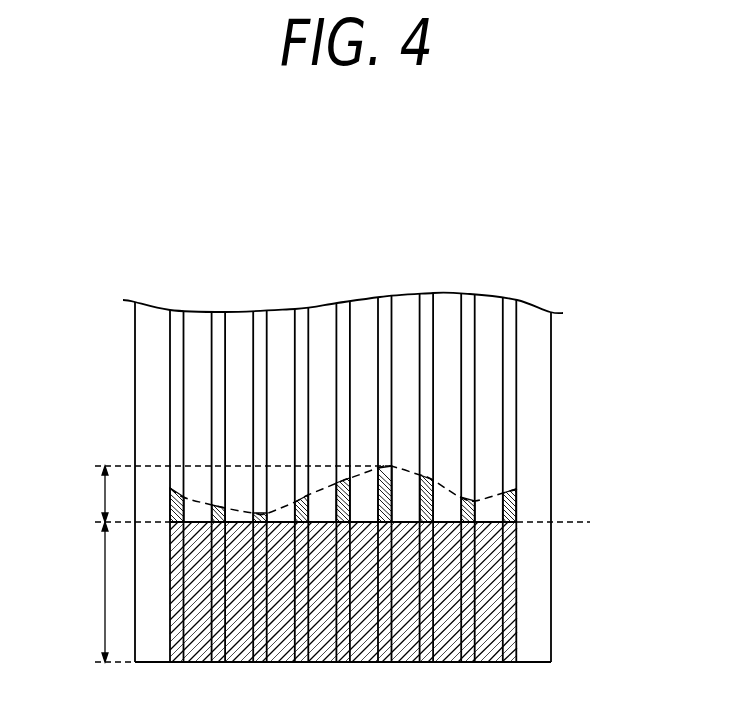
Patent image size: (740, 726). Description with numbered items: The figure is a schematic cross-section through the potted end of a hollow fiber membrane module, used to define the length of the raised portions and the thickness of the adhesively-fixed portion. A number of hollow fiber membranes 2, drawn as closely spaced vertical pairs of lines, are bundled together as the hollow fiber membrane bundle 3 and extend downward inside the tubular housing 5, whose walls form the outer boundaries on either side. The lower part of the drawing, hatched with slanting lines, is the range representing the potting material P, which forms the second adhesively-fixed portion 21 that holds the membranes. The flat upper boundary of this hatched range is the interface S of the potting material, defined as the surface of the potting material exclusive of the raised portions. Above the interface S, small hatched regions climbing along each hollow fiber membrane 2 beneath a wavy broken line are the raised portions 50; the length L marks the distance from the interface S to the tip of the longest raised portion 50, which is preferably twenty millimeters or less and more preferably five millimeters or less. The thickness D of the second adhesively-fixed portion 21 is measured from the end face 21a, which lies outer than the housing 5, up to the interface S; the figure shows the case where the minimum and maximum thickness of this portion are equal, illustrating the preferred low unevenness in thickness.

The hollow fiber membrane 2 is at (343, 440).
The hollow fiber membrane bundle 3 is at (300, 311).
The housing 5 is at (540, 407).
The raised portion 50 is at (390, 464).
The second adhesively-fixed portion 21 is at (396, 592).
The end face 21a is at (234, 668).
The potting material P is at (450, 567).
The interface S is at (353, 523).
The length of longest raised portion L is at (96, 494).
The thickness of second adhesively-fixed portion D is at (108, 592).